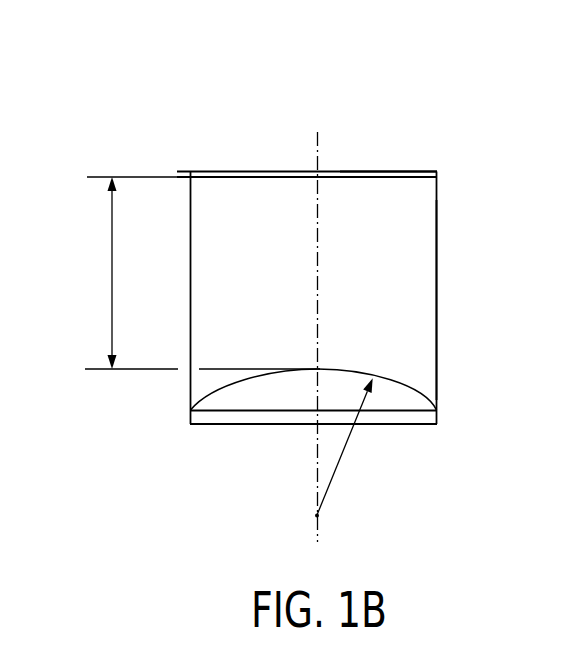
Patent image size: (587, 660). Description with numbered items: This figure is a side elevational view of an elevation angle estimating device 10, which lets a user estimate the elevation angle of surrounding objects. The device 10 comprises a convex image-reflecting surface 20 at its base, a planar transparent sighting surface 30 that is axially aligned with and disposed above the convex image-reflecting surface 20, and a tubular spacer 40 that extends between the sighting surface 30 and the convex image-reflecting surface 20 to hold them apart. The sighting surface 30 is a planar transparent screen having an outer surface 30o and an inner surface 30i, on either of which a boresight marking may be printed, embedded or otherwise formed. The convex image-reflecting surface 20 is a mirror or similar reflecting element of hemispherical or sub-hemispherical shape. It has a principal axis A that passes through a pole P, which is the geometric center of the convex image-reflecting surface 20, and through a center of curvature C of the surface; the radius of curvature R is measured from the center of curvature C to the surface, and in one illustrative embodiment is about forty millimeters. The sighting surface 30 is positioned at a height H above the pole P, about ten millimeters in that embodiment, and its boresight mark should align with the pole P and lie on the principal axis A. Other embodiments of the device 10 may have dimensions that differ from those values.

The elevation angle estimating device 10 is at (323, 228).
The convex image-reflecting surface 20 is at (200, 402).
The planar transparent sighting surface 30 is at (192, 172).
The inner surface of the sighting surface 30i is at (240, 172).
The outer surface of the sighting surface 30o is at (420, 170).
The tubular spacer 40 is at (437, 257).
The height H is at (112, 257).
The principal axis A is at (320, 238).
The pole P is at (318, 369).
The radius of curvature R is at (350, 443).
The center of curvature C is at (321, 519).